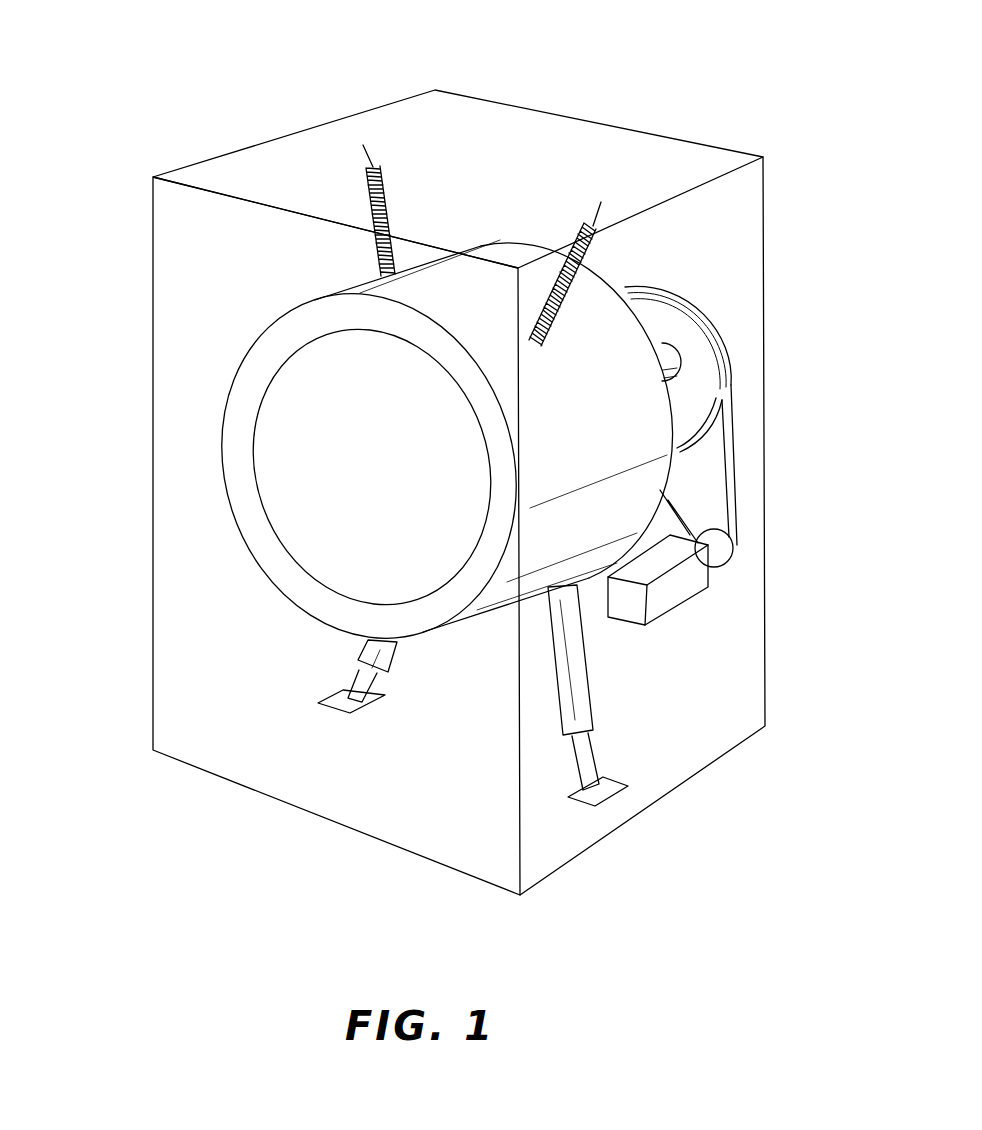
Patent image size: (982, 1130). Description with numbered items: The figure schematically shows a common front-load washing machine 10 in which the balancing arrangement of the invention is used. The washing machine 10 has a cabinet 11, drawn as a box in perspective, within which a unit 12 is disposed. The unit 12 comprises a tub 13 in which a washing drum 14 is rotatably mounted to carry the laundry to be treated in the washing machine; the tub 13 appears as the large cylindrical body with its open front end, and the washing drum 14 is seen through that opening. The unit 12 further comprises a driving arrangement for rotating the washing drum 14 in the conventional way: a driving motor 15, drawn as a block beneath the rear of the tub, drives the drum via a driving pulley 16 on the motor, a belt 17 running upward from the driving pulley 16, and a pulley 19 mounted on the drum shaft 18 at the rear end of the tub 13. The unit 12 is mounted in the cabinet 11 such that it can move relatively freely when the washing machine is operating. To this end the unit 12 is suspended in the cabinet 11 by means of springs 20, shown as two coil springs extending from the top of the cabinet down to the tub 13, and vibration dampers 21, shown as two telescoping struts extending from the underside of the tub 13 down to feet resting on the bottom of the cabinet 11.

The front-load washing machine 10 is at (593, 100).
The cabinet 11 is at (153, 311).
The unit 12 is at (505, 238).
The tub 13 is at (350, 292).
The washing drum 14 is at (323, 548).
The driving motor 15 is at (672, 598).
The driving pulley 16 is at (721, 556).
The belt 17 is at (733, 473).
The drum shaft 18 is at (664, 348).
The pulley 19 is at (697, 378).
The springs 20 is at (388, 197).
The vibration dampers 21 is at (395, 666).